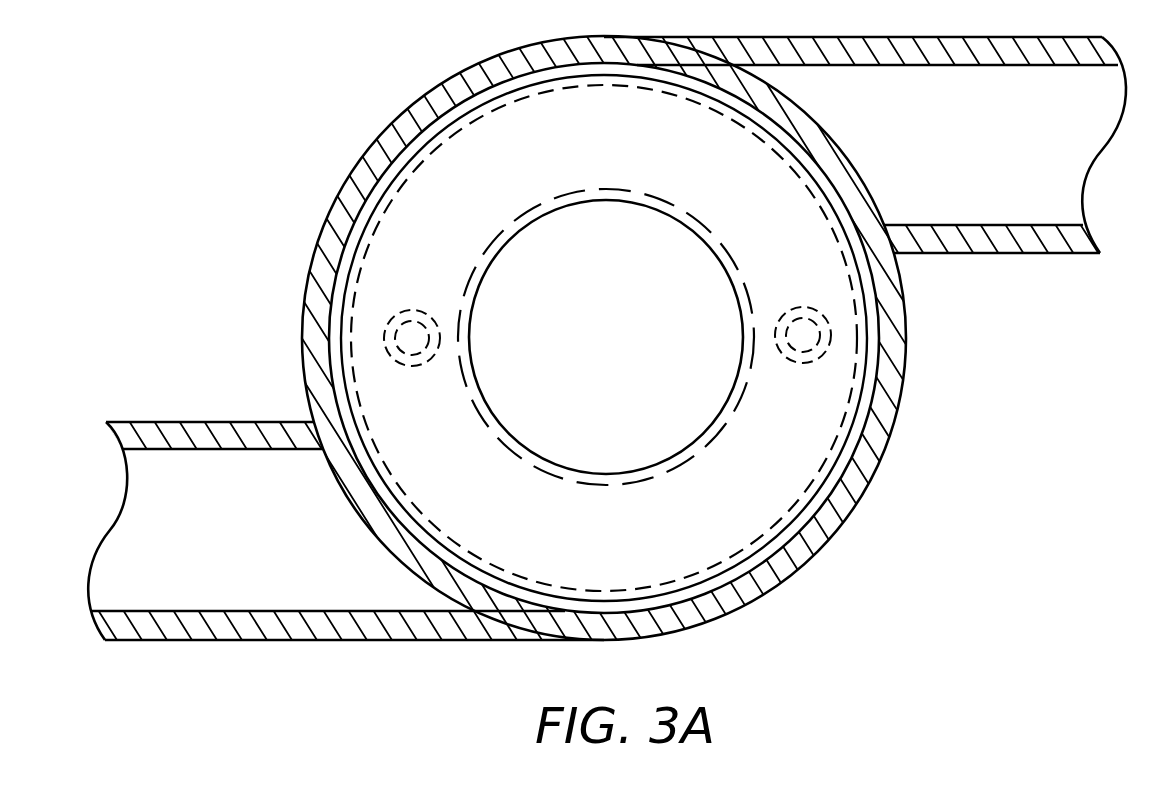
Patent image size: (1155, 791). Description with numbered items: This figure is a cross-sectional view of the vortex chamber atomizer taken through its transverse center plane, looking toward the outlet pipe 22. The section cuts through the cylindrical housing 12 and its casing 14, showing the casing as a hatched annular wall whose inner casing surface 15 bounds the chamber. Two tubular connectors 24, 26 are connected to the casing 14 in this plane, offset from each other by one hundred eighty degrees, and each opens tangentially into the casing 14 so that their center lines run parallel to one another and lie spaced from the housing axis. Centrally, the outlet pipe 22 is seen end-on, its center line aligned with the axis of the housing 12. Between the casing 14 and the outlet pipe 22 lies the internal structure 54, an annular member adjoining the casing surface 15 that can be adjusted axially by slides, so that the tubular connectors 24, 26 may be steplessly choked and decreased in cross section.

The cylindrical housing 12 is at (294, 246).
The casing 14 is at (388, 138).
The casing surface 15 is at (803, 515).
The outlet pipe 22 is at (667, 446).
The tubular connector 24 is at (236, 632).
The tubular connector 26 is at (1048, 246).
The internal structure 54 is at (832, 423).